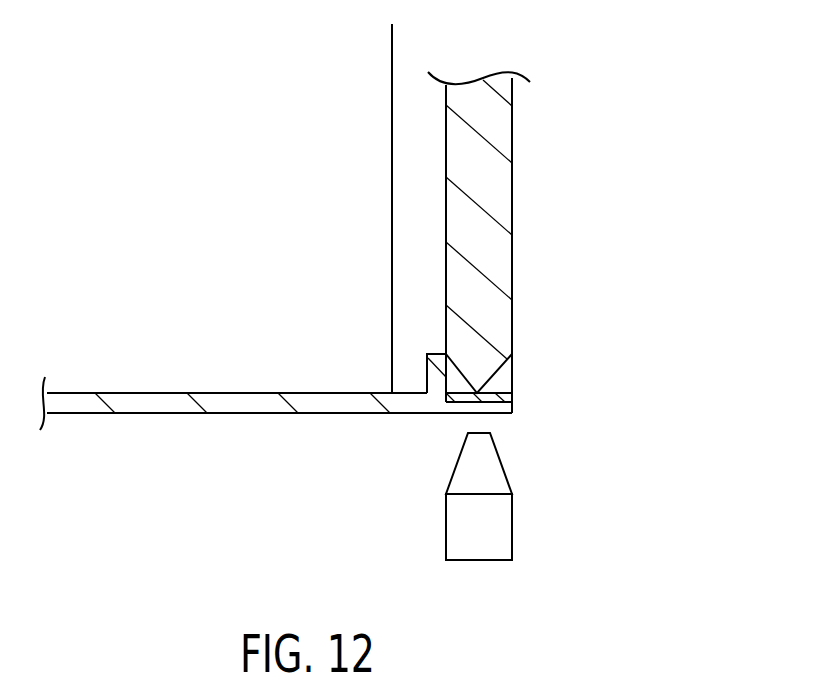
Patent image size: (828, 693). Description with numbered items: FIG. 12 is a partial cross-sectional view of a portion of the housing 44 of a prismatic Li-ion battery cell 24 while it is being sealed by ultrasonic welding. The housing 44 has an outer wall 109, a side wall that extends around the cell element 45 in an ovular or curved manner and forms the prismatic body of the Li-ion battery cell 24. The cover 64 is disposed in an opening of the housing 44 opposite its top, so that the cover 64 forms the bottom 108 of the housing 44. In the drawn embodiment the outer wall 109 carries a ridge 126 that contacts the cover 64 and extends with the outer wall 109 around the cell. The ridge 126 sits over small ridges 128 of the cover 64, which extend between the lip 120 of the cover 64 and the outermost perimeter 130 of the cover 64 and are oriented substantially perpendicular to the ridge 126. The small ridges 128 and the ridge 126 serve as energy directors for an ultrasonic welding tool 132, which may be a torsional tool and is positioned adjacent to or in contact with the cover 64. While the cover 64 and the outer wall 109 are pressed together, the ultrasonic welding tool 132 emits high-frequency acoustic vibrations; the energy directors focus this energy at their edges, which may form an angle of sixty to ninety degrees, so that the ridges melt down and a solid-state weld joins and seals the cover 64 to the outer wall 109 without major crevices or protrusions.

The Li-ion battery cell 24 is at (165, 502).
The housing 44 is at (497, 182).
The cell element 45 is at (356, 102).
The cover 64 is at (332, 400).
The bottom 108 is at (240, 441).
The outer wall 109 is at (497, 247).
The lip 120 is at (435, 380).
The ridge 126 is at (500, 360).
The small ridges 128 is at (503, 398).
The outermost perimeter 130 is at (503, 407).
The ultrasonic welding tool 132 is at (512, 527).